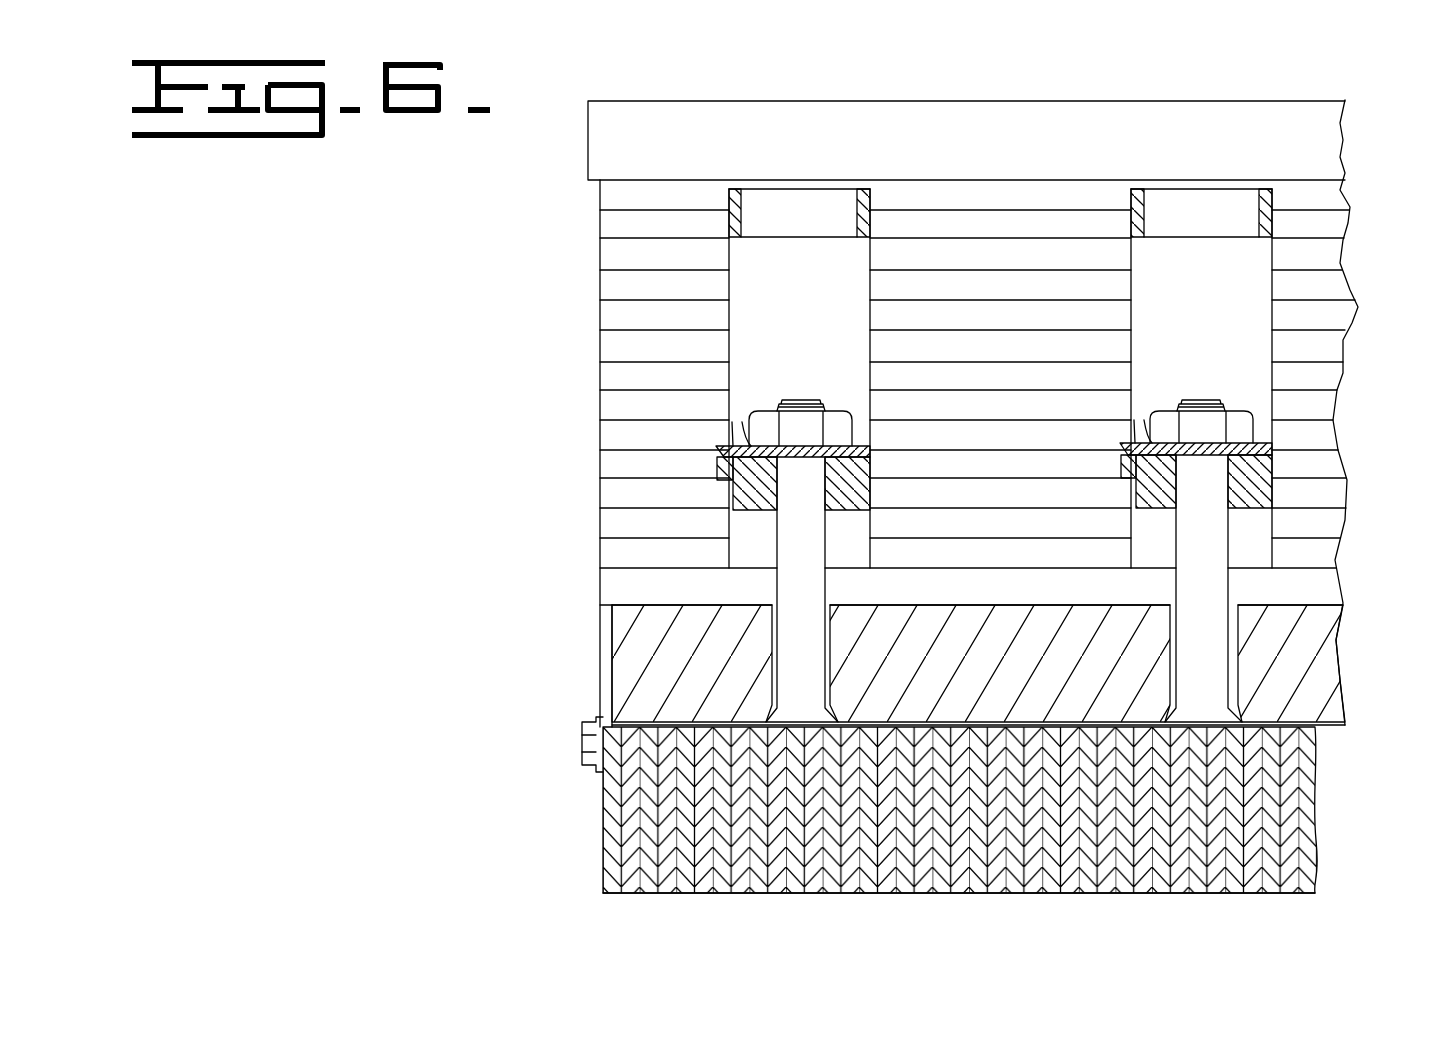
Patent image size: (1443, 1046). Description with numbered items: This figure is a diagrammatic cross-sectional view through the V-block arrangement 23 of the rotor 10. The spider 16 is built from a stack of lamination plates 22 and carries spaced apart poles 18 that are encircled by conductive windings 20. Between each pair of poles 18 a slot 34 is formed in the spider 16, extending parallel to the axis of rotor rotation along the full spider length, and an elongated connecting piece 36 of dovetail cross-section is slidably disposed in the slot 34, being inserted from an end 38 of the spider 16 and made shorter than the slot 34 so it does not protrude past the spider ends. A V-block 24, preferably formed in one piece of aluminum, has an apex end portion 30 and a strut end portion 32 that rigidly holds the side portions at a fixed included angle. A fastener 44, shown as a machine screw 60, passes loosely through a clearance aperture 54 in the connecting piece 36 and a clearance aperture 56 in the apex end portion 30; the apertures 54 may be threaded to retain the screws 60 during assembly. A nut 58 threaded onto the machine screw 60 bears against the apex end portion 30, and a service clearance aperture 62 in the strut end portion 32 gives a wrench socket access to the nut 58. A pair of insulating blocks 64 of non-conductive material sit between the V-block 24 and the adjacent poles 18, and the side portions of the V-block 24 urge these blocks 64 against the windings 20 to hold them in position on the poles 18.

The rotor 10 is at (498, 416).
The spider 16 is at (1316, 800).
The poles 18 is at (1006, 160).
The conductive windings 20 is at (1333, 285).
The lamination plates 22 is at (830, 893).
The V-block arrangement 23 is at (740, 146).
The V-block 24 is at (745, 283).
The apex end portion 30 is at (745, 490).
The strut end portion 32 is at (730, 225).
The slot 34 is at (648, 622).
The elongated connecting piece 36 is at (1300, 688).
The end of the spider 38 is at (603, 790).
The fastener 44 is at (733, 404).
The clearance apertures 54 is at (840, 655).
The clearance aperture 56 is at (848, 480).
The nut 58 is at (783, 411).
The machine screw 60 is at (775, 578).
The service clearance aperture 62 is at (742, 200).
The insulating blocks 64 is at (745, 548).